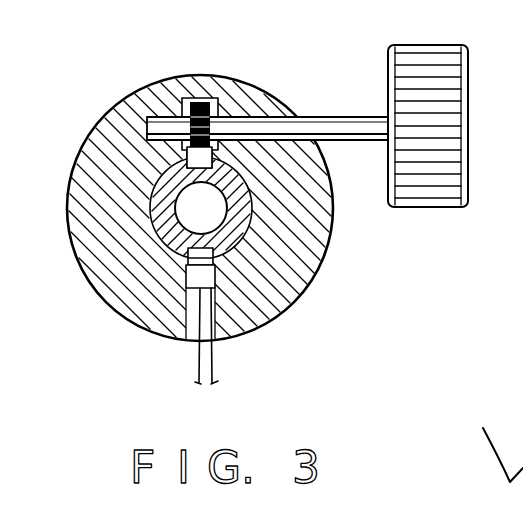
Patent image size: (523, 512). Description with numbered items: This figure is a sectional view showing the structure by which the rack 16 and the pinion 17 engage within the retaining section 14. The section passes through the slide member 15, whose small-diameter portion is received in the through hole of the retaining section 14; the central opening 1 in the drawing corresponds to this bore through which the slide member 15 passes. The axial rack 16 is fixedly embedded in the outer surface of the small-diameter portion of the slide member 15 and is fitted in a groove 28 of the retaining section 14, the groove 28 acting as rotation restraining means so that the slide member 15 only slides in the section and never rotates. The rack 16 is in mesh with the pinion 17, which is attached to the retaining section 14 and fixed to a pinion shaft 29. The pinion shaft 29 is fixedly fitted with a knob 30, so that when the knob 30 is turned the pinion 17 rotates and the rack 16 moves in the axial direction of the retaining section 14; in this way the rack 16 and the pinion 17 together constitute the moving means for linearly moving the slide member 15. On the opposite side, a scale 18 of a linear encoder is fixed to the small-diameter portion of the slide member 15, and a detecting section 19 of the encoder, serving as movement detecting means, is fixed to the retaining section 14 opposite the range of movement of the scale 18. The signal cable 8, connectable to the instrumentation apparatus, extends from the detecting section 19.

The bore / shaft opening 1 is at (296, 275).
The signal cable 8 is at (212, 369).
The retaining section 14 is at (95, 253).
The slide member 15 is at (153, 220).
The rack 16 is at (186, 163).
The pinion 17 is at (197, 101).
The scale 18 is at (192, 277).
The detecting section 19 is at (187, 256).
The groove 28 is at (228, 148).
The pinion shaft 29 is at (343, 117).
The knob 30 is at (428, 208).